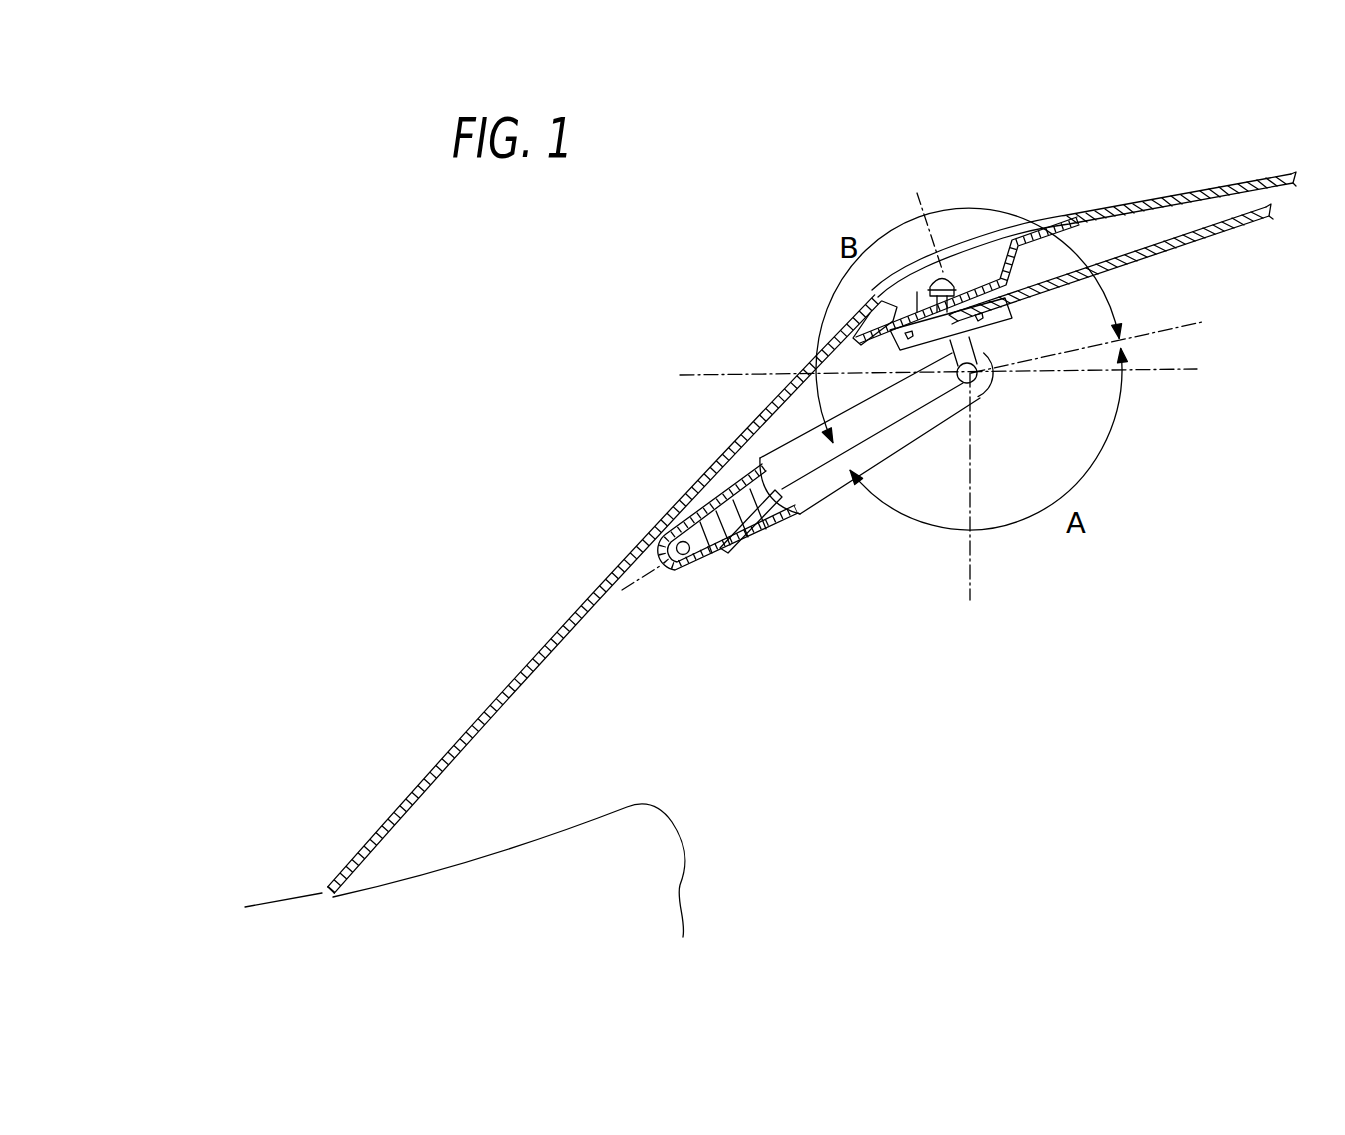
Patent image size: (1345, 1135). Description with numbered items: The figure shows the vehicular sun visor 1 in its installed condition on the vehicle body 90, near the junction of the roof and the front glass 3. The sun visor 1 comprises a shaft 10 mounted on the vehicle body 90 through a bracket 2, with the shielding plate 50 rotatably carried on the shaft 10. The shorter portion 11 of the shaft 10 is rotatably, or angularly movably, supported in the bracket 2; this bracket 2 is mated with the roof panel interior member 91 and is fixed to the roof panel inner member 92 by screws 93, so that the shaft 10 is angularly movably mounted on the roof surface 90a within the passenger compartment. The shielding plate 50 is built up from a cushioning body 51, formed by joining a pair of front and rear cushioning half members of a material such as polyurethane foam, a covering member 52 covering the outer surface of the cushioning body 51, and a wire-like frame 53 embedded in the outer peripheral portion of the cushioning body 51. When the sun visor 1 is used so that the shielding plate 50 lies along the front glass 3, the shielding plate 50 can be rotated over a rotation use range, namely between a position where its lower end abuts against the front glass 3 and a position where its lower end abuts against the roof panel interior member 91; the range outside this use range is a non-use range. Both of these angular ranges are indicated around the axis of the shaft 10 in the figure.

The sun visor 1 is at (742, 552).
The bracket 2 is at (1005, 302).
The front glass 3 is at (558, 628).
The shaft 10 is at (988, 398).
The shorter portion 11 is at (995, 340).
The shielding plate 50 is at (851, 476).
The cushioning body 51 is at (730, 542).
The covering member 52 is at (758, 538).
The wire-like frame 53 is at (681, 557).
The vehicle body 90 is at (1245, 178).
The roof surface 90a is at (1215, 238).
The roof panel interior member 91 is at (1169, 240).
The roof panel inner member 92 is at (1003, 273).
The screws 93 is at (977, 272).